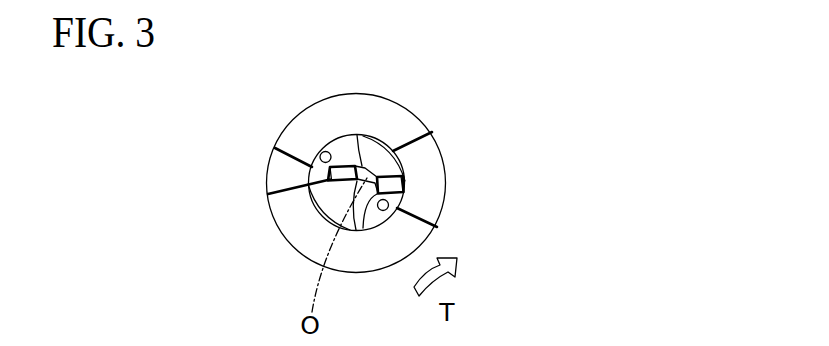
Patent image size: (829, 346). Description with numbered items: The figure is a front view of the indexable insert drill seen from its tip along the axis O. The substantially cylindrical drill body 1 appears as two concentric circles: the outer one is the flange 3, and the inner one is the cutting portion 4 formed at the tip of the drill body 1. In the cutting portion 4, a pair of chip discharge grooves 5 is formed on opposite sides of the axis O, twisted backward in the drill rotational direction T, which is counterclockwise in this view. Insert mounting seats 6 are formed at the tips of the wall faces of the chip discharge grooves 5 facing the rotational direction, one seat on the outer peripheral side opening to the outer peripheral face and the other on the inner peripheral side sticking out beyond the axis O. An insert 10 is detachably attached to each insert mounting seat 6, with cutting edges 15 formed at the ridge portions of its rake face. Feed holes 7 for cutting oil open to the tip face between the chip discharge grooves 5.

The drill body 1 is at (497, 50).
The flange 3 is at (440, 115).
The cutting portion 4 is at (388, 128).
The chip discharge grooves 5 is at (328, 213).
The insert mounting seats 6 is at (340, 141).
The feed holes 7 is at (323, 152).
The insert 10 is at (297, 174).
The cutting edges 15 is at (337, 206).